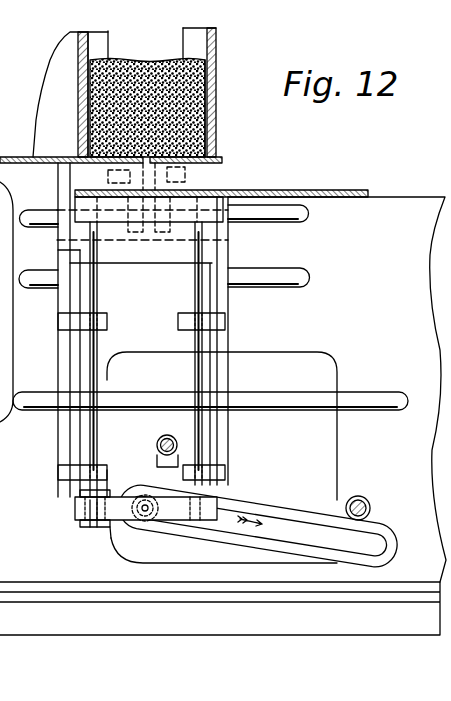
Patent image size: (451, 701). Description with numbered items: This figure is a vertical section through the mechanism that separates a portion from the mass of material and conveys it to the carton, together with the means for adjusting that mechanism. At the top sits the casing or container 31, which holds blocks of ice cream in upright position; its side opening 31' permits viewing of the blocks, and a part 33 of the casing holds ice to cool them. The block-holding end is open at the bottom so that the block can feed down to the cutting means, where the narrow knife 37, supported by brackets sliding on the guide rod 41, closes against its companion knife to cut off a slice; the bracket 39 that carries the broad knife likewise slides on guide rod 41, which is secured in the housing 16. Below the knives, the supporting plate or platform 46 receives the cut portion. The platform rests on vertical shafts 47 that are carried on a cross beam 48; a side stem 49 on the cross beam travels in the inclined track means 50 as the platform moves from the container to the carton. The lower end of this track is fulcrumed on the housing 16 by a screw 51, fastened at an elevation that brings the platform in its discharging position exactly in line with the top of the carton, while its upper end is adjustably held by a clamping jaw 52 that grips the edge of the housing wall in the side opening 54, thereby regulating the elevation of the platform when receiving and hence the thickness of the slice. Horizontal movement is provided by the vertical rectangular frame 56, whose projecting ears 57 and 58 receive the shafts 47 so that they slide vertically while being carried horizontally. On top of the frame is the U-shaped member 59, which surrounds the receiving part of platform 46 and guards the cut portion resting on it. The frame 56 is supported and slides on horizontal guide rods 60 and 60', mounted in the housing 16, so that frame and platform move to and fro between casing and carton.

The housing 16 is at (223, 389).
The casing or container 31 is at (227, 92).
The side opening 31' is at (147, 89).
The part of the casing 33 is at (55, 102).
The narrow knife 37 is at (227, 161).
The bracket 39 is at (130, 184).
The guide rod 41 is at (307, 212).
The supporting plate or platform 46 is at (245, 195).
The vertical shafts 47 is at (192, 297).
The cross beam 48 is at (75, 508).
The side stem 49 is at (145, 521).
The inclined track means 50 is at (280, 508).
The screw 51 is at (369, 506).
The clamping jaw 52 is at (95, 527).
The side opening 54 is at (110, 527).
The vertical rectangular frame 56 is at (62, 343).
The projecting ear 57 is at (180, 318).
The projecting ear 58 is at (183, 467).
The U-shaped member 59 is at (57, 188).
The horizontal guide rod 60 is at (210, 385).
The horizontal guide rod 60' is at (164, 301).